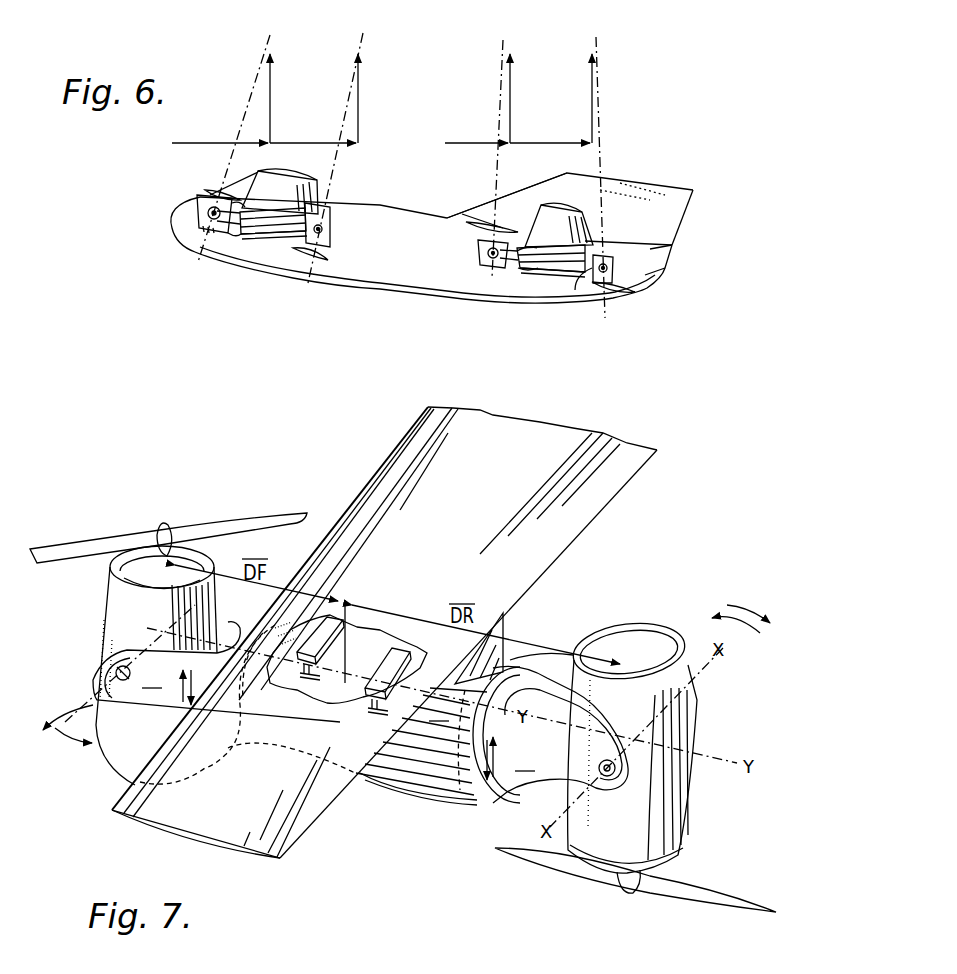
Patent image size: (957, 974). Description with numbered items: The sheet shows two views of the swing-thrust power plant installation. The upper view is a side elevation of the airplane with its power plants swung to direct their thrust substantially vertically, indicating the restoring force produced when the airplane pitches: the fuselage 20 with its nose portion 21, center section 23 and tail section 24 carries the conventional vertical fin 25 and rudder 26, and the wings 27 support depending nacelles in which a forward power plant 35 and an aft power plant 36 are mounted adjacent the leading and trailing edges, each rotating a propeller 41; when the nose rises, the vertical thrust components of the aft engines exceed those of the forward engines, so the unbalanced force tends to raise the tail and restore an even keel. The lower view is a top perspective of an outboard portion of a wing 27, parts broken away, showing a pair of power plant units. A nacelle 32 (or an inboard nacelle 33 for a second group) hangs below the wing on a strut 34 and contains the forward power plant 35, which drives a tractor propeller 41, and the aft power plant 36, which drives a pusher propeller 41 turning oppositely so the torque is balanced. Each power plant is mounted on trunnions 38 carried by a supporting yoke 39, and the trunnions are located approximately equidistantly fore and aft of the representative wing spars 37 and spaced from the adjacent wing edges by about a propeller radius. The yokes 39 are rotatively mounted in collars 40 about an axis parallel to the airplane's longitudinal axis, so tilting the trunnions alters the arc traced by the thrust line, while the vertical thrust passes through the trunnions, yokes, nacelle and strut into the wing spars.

In FIG. 6, the fuselage 20 is at (287, 268).
In FIG. 6, the nose portion 21 is at (170, 222).
In FIG. 6, the center section 23 is at (384, 284).
In FIG. 6, the tail section 24 is at (652, 272).
In FIG. 6, the vertical fin 25 is at (638, 190).
In FIG. 6, the rudder 26 is at (680, 220).
In FIG. 6, the wing 27 is at (272, 174).
In FIG. 7, the wing 27 is at (392, 470).
In FIG. 6, the nacelle 32 is at (270, 237).
In FIG. 7, the nacelle 32 is at (365, 781).
In FIG. 6, the inboard nacelle 33 is at (273, 213).
In FIG. 7, the inboard nacelle 33 is at (464, 726).
In FIG. 6, the strut 34 is at (295, 181).
In FIG. 7, the strut 34 is at (505, 630).
In FIG. 6, the forward power plant 35 is at (205, 206).
In FIG. 7, the forward power plant 35 is at (115, 604).
In FIG. 6, the aft power plant 36 is at (326, 236).
In FIG. 7, the aft power plant 36 is at (672, 804).
In FIG. 7, the wing spar 37 is at (328, 702).
In FIG. 6, the trunnion 38 is at (222, 221).
In FIG. 7, the trunnion 38 is at (114, 669).
In FIG. 6, the yoke 39 is at (577, 292).
In FIG. 7, the yoke 39 is at (360, 726).
In FIG. 6, the collar 40 is at (323, 210).
In FIG. 7, the collar 40 is at (231, 735).
In FIG. 6, the propeller 41 is at (210, 190).
In FIG. 7, the propeller 41 is at (73, 546).